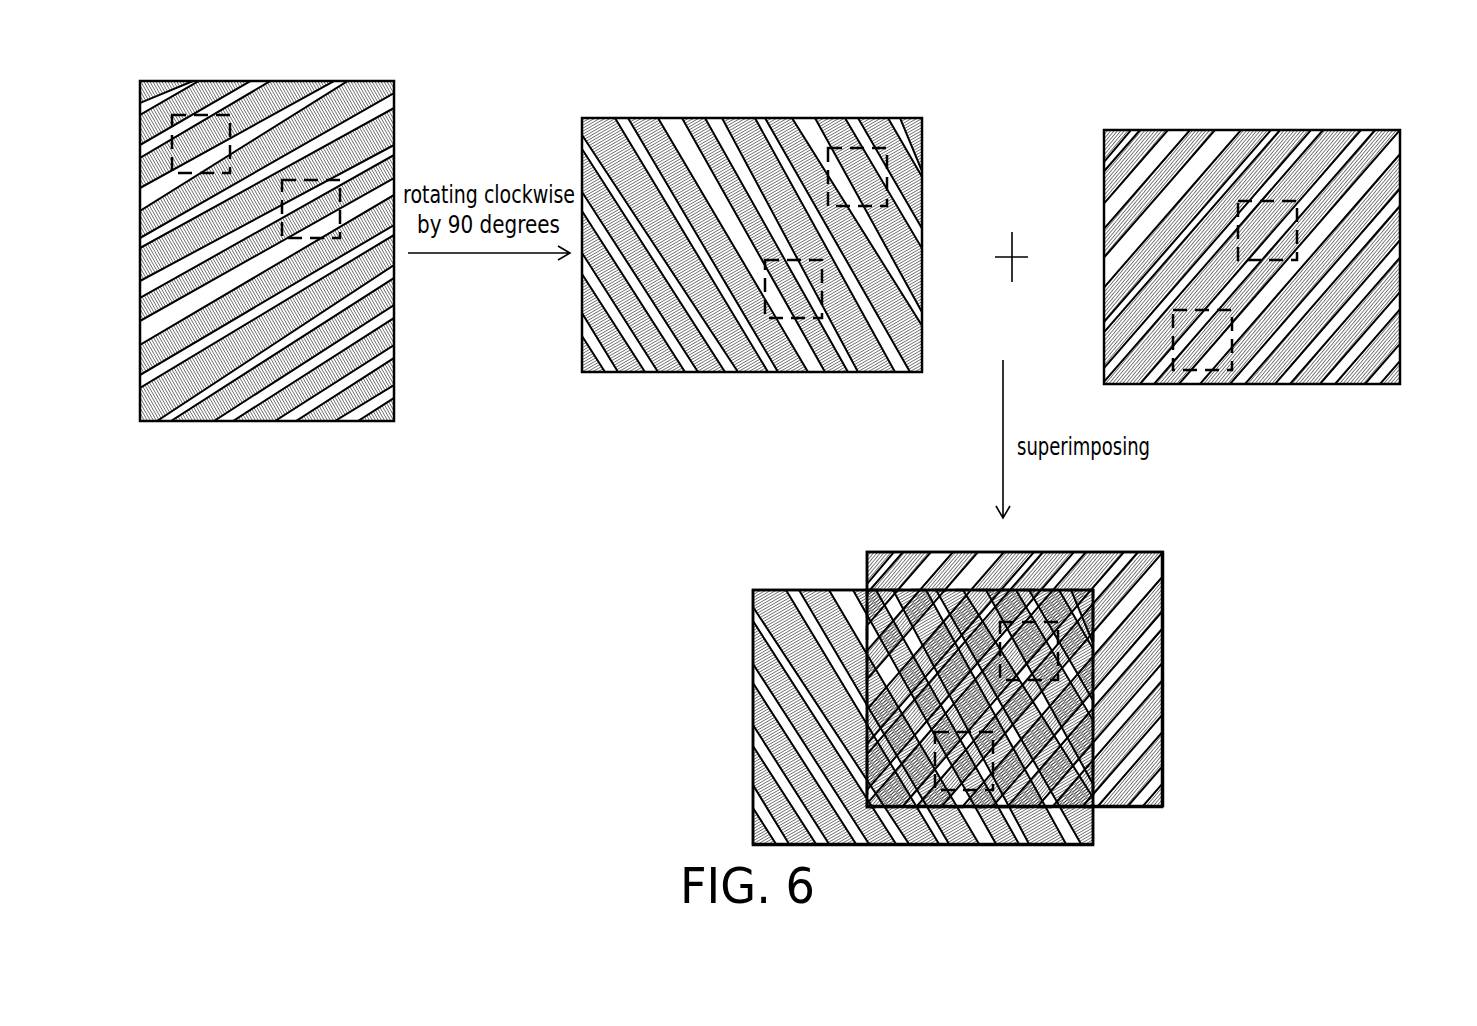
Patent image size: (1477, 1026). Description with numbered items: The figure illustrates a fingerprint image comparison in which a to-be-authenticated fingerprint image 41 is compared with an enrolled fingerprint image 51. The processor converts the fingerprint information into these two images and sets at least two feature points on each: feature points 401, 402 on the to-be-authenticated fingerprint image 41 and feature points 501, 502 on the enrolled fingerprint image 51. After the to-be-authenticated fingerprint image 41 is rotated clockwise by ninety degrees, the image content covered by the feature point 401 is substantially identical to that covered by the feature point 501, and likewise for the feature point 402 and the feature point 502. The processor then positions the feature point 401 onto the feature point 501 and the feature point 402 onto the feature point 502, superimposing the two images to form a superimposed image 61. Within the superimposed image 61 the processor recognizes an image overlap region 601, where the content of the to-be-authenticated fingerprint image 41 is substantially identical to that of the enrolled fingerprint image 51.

The to-be-authenticated fingerprint image 41 is at (140, 250).
The enrolled fingerprint image 51 is at (1401, 292).
The superimposed image 61 is at (1237, 566).
The feature point 401 is at (188, 78).
The feature point 402 is at (328, 178).
The feature point 501 is at (1271, 200).
The feature point 502 is at (1210, 385).
The image overlap region 601 is at (1163, 795).